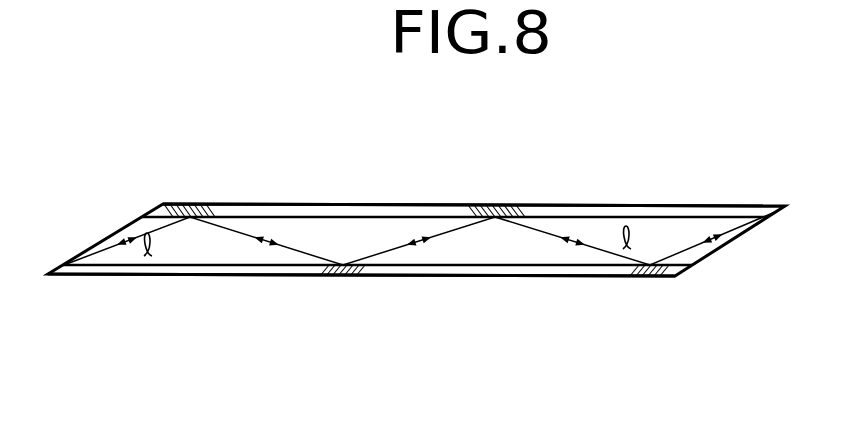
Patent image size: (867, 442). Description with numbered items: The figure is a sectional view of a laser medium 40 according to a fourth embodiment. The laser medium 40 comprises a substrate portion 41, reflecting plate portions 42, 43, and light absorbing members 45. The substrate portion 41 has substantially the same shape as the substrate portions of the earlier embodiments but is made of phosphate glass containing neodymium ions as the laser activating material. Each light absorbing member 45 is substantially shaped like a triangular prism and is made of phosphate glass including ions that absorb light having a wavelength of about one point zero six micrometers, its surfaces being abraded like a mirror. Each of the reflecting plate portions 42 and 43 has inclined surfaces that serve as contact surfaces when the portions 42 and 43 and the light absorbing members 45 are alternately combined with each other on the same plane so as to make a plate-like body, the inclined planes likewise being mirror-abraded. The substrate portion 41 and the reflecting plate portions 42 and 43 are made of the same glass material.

The laser medium 40 is at (416, 269).
The substrate portion 41 is at (693, 228).
The reflecting plate portion 42 is at (365, 206).
The reflecting plate portion 43 is at (247, 268).
The light absorbing member 45 is at (202, 203).